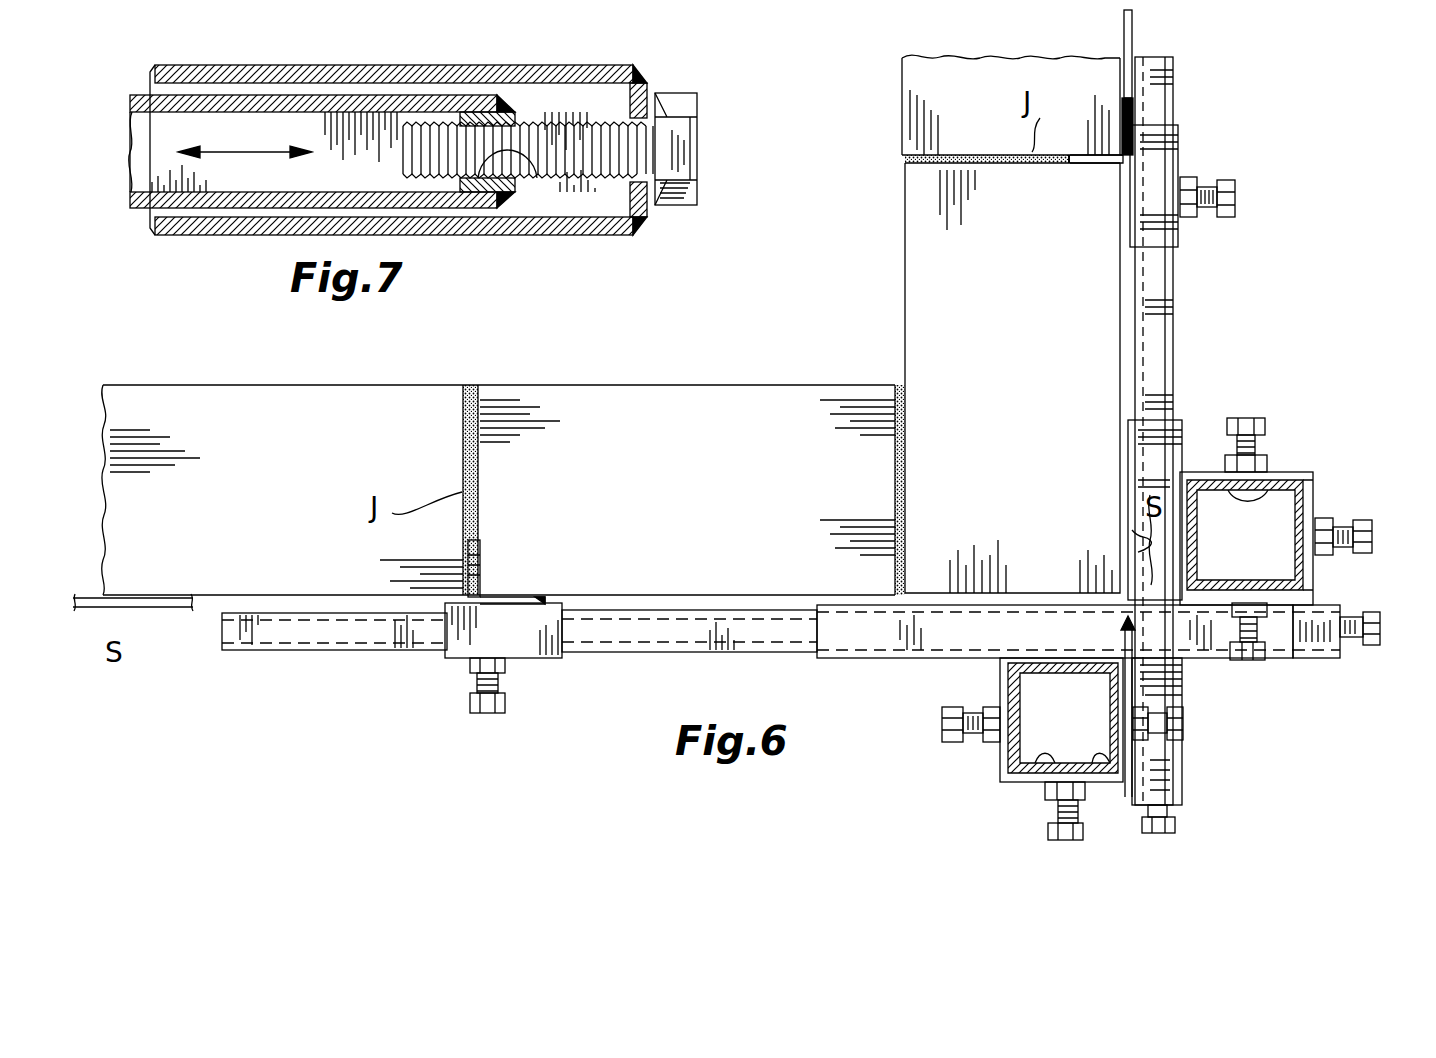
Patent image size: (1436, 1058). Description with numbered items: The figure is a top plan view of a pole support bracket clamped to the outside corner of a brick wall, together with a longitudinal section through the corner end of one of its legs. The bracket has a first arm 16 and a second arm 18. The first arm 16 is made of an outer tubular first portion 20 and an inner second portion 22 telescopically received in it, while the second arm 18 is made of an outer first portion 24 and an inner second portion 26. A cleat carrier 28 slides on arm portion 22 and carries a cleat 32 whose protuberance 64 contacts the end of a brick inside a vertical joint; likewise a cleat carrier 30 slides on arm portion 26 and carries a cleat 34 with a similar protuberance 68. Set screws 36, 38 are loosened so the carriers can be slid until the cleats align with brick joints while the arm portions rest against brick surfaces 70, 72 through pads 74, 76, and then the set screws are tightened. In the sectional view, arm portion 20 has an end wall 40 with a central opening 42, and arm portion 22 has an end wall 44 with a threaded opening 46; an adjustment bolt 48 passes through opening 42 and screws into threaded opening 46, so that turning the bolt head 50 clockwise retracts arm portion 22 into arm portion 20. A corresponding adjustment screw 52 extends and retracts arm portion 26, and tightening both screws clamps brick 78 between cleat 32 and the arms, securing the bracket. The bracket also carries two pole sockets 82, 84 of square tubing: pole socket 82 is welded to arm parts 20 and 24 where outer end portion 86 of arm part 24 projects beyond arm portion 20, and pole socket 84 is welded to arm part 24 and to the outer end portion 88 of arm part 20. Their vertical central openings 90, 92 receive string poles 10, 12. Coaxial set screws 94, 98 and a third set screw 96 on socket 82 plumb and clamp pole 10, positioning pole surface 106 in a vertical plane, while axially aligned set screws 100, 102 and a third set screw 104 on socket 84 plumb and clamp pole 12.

In FIG. 6, the string pole 10 is at (1287, 600).
In FIG. 6, the string pole 12 is at (1268, 490).
In FIG. 7, the first arm 16 is at (227, 248).
In FIG. 6, the first arm 16 is at (633, 668).
In FIG. 6, the second arm 18 is at (1188, 362).
In FIG. 7, the first portion of first arm 20 is at (492, 235).
In FIG. 6, the first portion of first arm 20 is at (935, 612).
In FIG. 7, the second portion of first arm 22 is at (340, 98).
In FIG. 6, the second portion of first arm 22 is at (293, 635).
In FIG. 6, the first portion of second arm 24 is at (1145, 428).
In FIG. 6, the second portion of second arm 26 is at (1160, 305).
In FIG. 6, the cleat carrier 28 is at (528, 658).
In FIG. 6, the cleat carrier 30 is at (1160, 160).
In FIG. 6, the cleat 32 is at (485, 570).
In FIG. 6, the cleat 34 is at (1100, 163).
In FIG. 6, the set screw 36 is at (470, 705).
In FIG. 6, the set screw 38 is at (1237, 200).
In FIG. 7, the end wall 40 is at (650, 210).
In FIG. 7, the central opening 42 is at (618, 132).
In FIG. 7, the end wall 44 is at (515, 113).
In FIG. 7, the threaded opening 46 is at (533, 182).
In FIG. 7, the adjustment bolt 48 is at (705, 105).
In FIG. 7, the bolt head 50 is at (680, 162).
In FIG. 6, the bolt head 50 is at (1375, 632).
In FIG. 6, the adjustment screw 52 is at (1178, 825).
In FIG. 6, the protuberance 64 is at (483, 545).
In FIG. 6, the protuberance 68 is at (1073, 165).
In FIG. 6, the brick surface 70 is at (1028, 615).
In FIG. 6, the brick surface 72 is at (1155, 547).
In FIG. 6, the pad 74 is at (1050, 602).
In FIG. 6, the pad 76 is at (1120, 463).
In FIG. 6, the brick 78 is at (905, 290).
In FIG. 6, the pole socket 82 is at (1000, 752).
In FIG. 6, the pole socket 84 is at (1300, 470).
In FIG. 6, the outer end portion 86 is at (1188, 705).
In FIG. 6, the outer end portion 88 is at (1290, 660).
In FIG. 6, the vertical central opening 90 is at (1025, 766).
In FIG. 6, the vertical central opening 92 is at (1305, 570).
In FIG. 6, the set screw 94 is at (940, 732).
In FIG. 6, the set screw 96 is at (1065, 833).
In FIG. 6, the set screw 98 is at (1185, 748).
In FIG. 6, the set screw 100 is at (1245, 418).
In FIG. 6, the set screw 102 is at (1252, 660).
In FIG. 6, the set screw 104 is at (1378, 500).
In FIG. 6, the pole surface 106 is at (1150, 725).